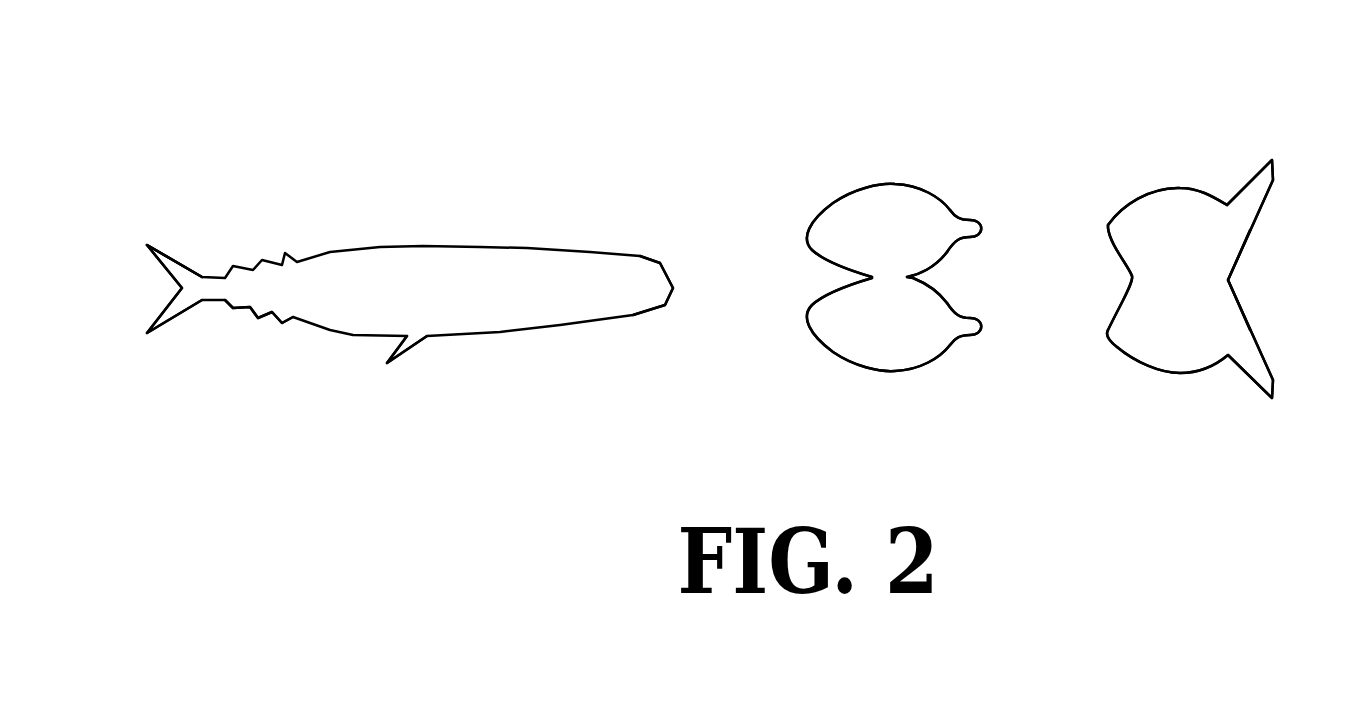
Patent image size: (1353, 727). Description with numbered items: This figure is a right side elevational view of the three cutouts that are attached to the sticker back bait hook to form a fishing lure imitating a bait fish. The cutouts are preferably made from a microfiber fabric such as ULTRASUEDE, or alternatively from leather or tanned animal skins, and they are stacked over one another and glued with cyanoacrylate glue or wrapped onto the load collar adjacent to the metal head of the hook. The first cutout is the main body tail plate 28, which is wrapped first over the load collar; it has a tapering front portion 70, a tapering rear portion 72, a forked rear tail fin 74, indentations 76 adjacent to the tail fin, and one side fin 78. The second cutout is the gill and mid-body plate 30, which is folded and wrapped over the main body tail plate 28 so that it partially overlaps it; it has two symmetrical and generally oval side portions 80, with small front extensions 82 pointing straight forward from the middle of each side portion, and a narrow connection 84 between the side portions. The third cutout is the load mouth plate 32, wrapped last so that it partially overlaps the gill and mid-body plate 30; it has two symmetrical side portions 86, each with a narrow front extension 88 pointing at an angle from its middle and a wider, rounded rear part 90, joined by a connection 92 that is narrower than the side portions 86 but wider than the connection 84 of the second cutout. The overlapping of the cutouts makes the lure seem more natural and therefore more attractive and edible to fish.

The main body tail plate 28 is at (418, 243).
The gill and mid-body plate 30 is at (895, 185).
The load mouth plate 32 is at (1183, 186).
The tapering front portion 70 is at (655, 262).
The tapering rear portion 72 is at (182, 288).
The forked rear tail fin 74 is at (147, 243).
The indentations 76 is at (258, 320).
The side fin 78 is at (387, 365).
The side portions 80 is at (840, 198).
The front extensions 82 is at (985, 220).
The narrow connection 84 is at (917, 280).
The side portions 86 is at (1145, 192).
The narrow front extension 88 is at (1272, 160).
The rounded rear part 90 is at (1108, 218).
The connection 92 is at (1230, 280).